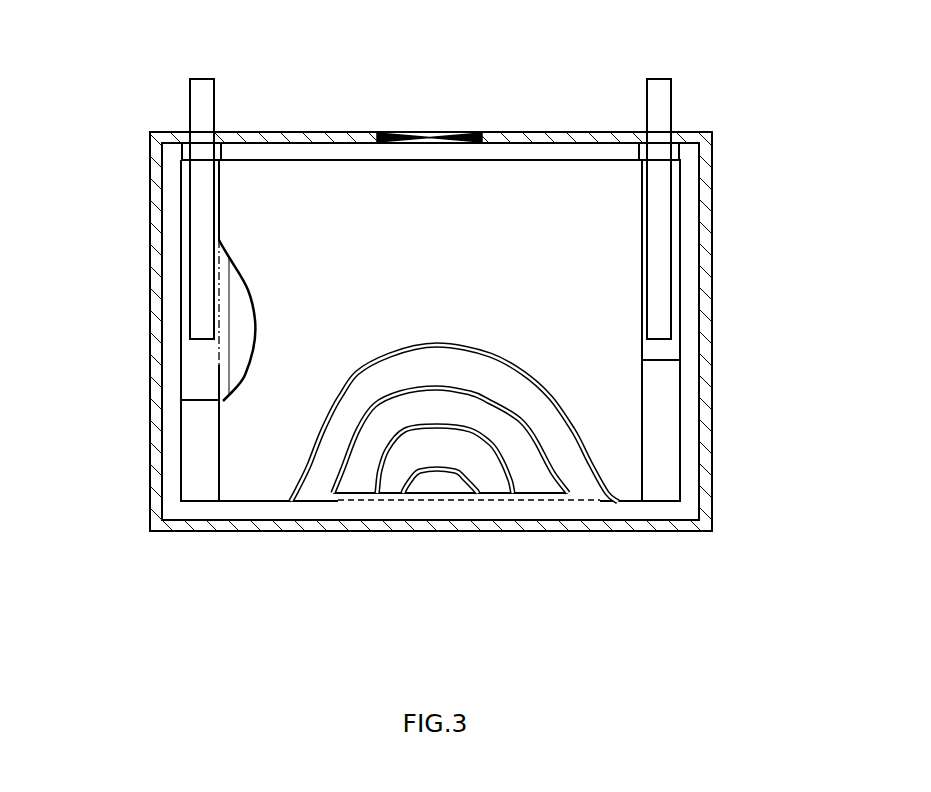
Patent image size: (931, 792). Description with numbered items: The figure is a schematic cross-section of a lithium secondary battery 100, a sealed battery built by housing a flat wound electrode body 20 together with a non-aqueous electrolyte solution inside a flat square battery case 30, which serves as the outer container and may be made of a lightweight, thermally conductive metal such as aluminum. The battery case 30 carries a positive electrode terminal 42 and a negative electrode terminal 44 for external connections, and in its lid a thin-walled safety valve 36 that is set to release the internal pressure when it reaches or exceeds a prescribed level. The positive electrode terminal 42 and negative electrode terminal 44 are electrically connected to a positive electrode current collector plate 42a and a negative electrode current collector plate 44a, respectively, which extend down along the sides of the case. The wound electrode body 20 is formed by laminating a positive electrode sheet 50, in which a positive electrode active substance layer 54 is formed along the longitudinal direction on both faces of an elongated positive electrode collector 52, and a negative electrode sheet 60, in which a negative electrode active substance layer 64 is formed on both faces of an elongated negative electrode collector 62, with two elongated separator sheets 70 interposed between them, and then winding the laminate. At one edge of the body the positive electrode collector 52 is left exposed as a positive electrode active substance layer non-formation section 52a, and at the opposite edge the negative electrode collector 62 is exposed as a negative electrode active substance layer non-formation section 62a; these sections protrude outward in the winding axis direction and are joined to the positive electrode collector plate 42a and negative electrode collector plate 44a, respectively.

The lithium secondary battery 100 is at (711, 96).
The wound electrode body 20 is at (316, 192).
The battery case 30 is at (713, 248).
The safety valve 36 is at (430, 132).
The positive electrode terminal 42 is at (202, 85).
The positive electrode current collector plate 42a is at (203, 228).
The negative electrode terminal 44 is at (659, 85).
The negative electrode current collector plate 44a is at (659, 193).
The positive electrode sheet 50 is at (317, 483).
The positive electrode collector 52 is at (182, 398).
The positive electrode active substance layer non-formation section 52a is at (197, 475).
The positive electrode active substance layer 54 is at (242, 297).
The negative electrode sheet 60 is at (395, 482).
The negative electrode collector 62 is at (682, 353).
The negative electrode active substance layer non-formation section 62a is at (666, 399).
The negative electrode active substance layer 64 is at (442, 537).
The separator sheet 70 is at (257, 432).